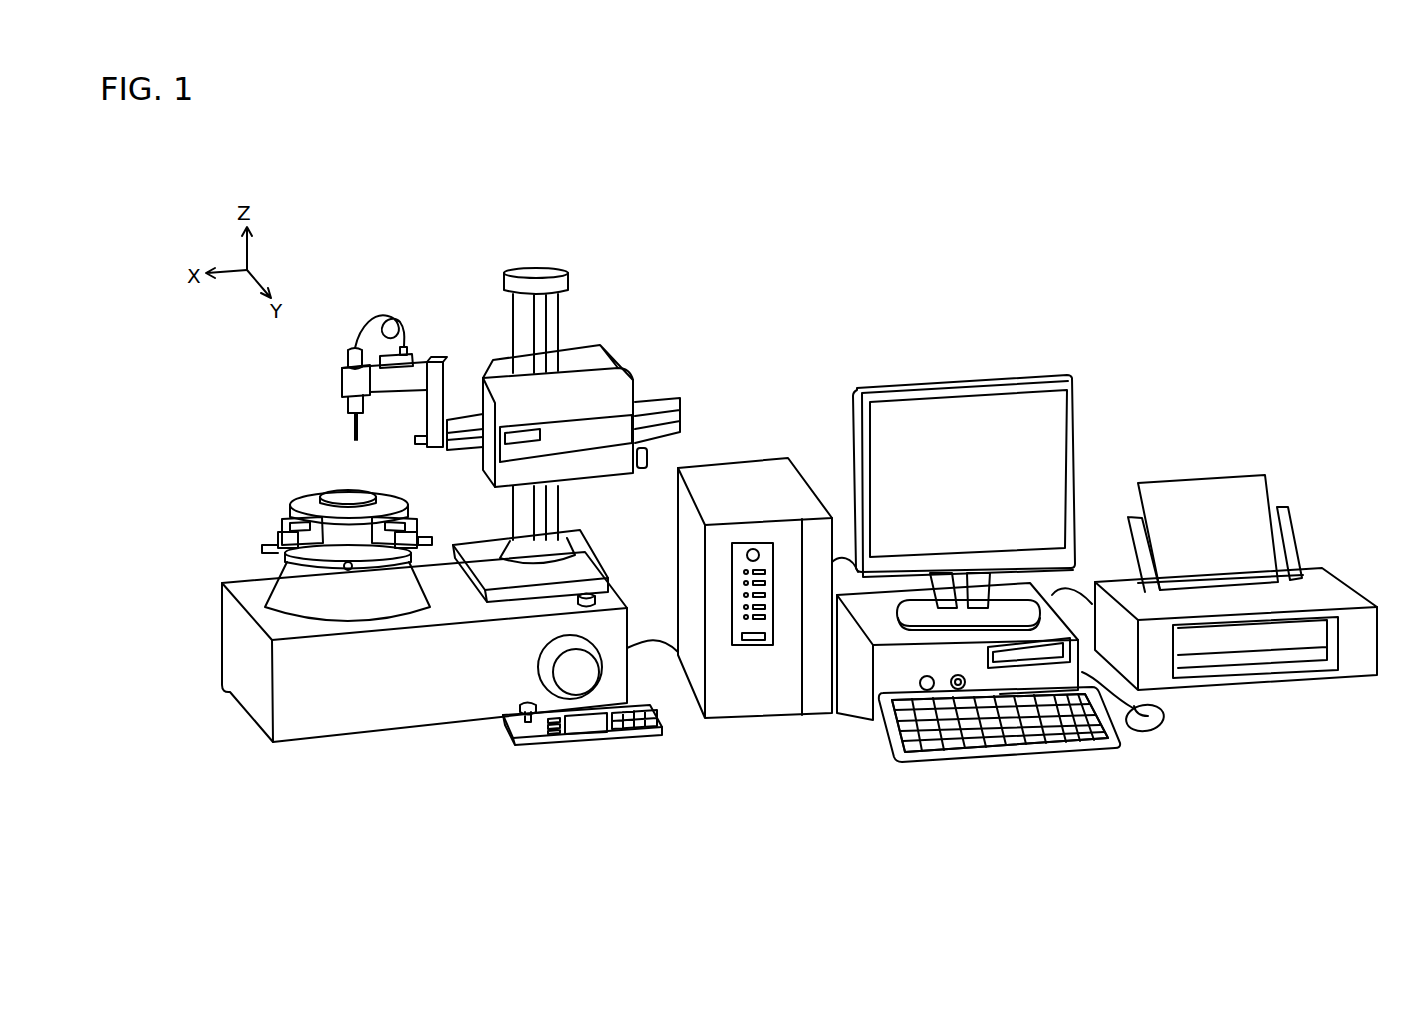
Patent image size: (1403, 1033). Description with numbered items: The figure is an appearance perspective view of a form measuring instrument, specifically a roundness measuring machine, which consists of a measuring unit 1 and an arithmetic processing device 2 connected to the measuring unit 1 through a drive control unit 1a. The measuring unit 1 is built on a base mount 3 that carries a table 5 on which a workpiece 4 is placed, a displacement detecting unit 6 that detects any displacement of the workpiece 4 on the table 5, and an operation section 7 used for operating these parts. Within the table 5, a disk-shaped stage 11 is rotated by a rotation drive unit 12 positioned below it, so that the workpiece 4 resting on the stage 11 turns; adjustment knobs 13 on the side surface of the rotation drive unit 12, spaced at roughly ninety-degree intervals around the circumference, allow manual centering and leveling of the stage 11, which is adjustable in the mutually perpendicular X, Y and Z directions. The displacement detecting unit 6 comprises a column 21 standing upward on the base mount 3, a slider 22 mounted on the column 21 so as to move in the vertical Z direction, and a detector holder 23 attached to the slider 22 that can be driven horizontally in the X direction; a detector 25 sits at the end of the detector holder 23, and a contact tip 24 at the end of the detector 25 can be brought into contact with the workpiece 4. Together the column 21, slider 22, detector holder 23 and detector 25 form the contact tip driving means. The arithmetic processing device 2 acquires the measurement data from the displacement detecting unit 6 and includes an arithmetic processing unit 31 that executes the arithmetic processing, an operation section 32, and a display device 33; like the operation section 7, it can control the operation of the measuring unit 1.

The measuring unit 1 is at (512, 145).
The drive control unit 1a is at (757, 427).
The arithmetic processing device 2 is at (930, 312).
The base mount 3 is at (330, 728).
The workpiece 4 is at (336, 490).
The table 5 is at (177, 550).
The displacement detecting unit 6 is at (483, 287).
The operation section 7 is at (563, 740).
The stage 11 is at (300, 505).
The adjustment knobs 13 is at (282, 530).
The rotation drive unit 12 is at (290, 572).
The column 21 is at (560, 305).
The slider 22 is at (618, 373).
The detector holder 23 is at (437, 447).
The contact tip 24 is at (355, 437).
The detector 25 is at (350, 403).
The arithmetic processing unit 31 is at (877, 708).
The operation section 32 is at (1145, 725).
The display device 33 is at (987, 387).